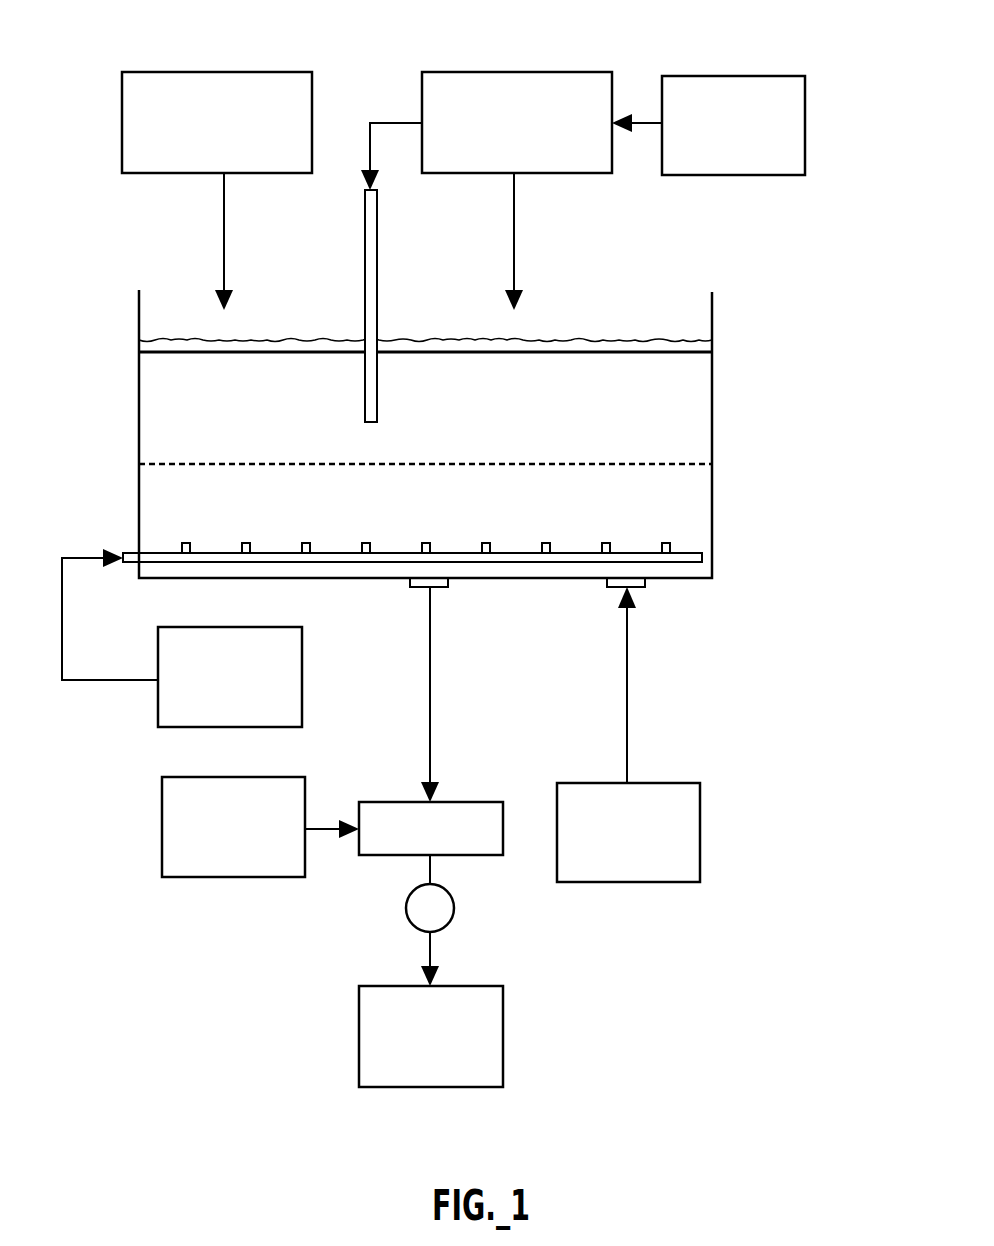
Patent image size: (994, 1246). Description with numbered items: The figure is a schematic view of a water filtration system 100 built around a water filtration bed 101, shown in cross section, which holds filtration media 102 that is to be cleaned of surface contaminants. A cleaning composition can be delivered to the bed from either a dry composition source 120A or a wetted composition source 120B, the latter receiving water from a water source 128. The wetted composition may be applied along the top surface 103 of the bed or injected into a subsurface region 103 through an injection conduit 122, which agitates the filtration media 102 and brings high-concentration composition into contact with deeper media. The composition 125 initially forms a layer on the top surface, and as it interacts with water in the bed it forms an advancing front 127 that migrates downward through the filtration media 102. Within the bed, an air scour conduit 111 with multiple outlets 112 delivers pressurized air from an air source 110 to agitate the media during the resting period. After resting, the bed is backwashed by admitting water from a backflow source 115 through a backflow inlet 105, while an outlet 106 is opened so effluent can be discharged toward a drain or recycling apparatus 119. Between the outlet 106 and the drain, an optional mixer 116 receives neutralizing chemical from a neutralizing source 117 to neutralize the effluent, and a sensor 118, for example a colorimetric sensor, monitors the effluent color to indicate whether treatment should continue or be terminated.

The water filtration system 100 is at (124, 272).
The water filtration bed 101 is at (712, 482).
The filtration media 102 is at (655, 428).
The top surface / subsurface region 103 is at (157, 353).
The backflow inlet 105 is at (642, 585).
The outlet 106 is at (447, 585).
The air source 110 is at (303, 682).
The air scour conduit 111 is at (210, 557).
The outlets 112 is at (183, 547).
The backflow source 115 is at (700, 830).
The mixer 116 is at (468, 800).
The neutralizing source 117 is at (160, 832).
The sensor 118 is at (455, 905).
The drain or recycling apparatus 119 is at (504, 1030).
The dry composition source 120A is at (207, 72).
The wetted composition source 120B is at (513, 72).
The injection conduit 122 is at (377, 288).
The composition 125 is at (706, 344).
The advancing front 127 is at (140, 455).
The water source 128 is at (723, 76).